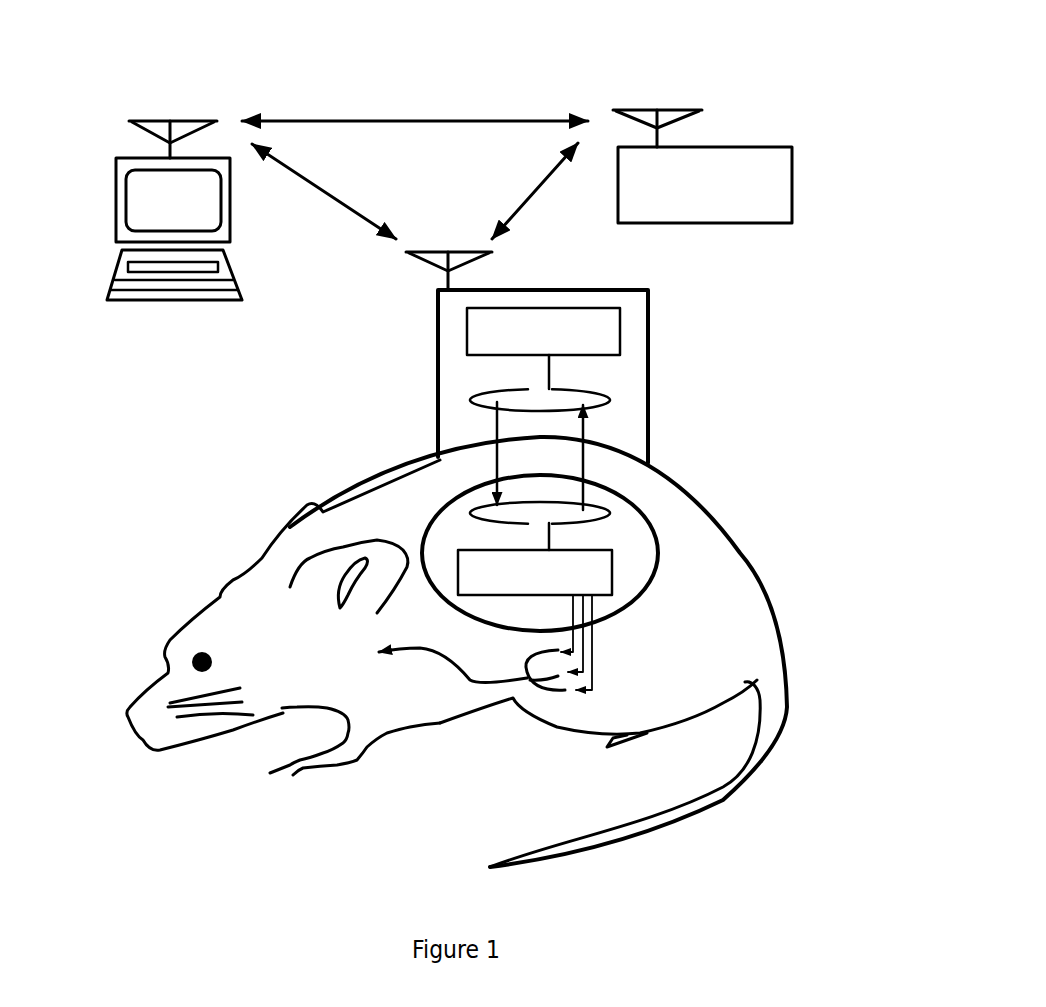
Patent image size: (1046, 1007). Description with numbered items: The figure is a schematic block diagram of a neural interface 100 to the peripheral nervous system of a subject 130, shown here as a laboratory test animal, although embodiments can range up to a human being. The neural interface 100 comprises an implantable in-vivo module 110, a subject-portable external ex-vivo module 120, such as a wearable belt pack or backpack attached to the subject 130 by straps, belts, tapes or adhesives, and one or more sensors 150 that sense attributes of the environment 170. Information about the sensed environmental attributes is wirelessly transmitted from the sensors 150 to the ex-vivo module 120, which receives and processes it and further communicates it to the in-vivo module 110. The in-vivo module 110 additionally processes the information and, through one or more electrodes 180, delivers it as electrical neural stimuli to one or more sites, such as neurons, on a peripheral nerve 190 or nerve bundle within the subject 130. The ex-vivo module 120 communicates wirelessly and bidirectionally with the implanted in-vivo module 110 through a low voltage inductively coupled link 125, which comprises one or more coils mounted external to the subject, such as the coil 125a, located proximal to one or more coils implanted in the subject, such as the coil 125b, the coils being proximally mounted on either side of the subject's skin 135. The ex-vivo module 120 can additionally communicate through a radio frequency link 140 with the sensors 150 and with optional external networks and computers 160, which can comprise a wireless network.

The neural interface 100 is at (586, 50).
The in-vivo module 110 is at (640, 545).
The ex-vivo module 120 is at (630, 378).
The inductively coupled link 125 is at (598, 461).
The external coil 125a is at (477, 385).
The implanted coil 125b is at (460, 519).
The subject 130 is at (745, 656).
The skin 135 is at (681, 472).
The radio frequency link 140 is at (406, 264).
The sensor 150 is at (782, 216).
The external networks and computers 160 is at (181, 211).
The environment 170 is at (226, 460).
The electrode 180 is at (606, 670).
The peripheral nerve 190 is at (442, 663).